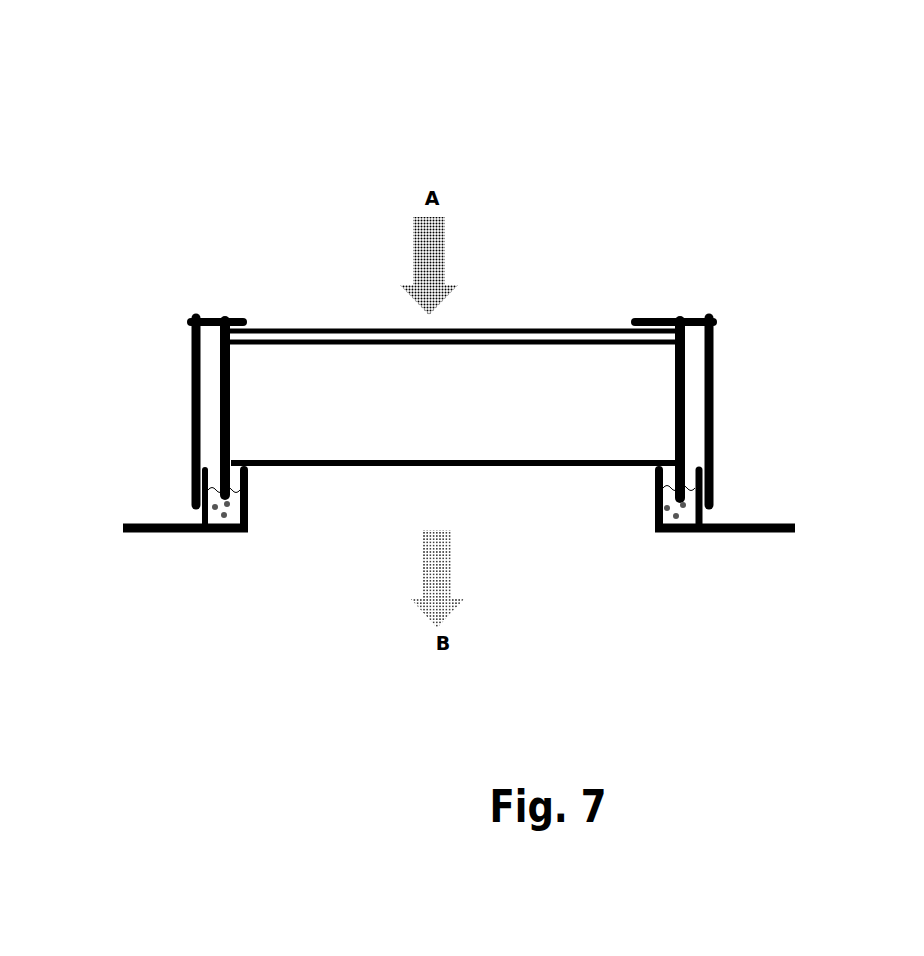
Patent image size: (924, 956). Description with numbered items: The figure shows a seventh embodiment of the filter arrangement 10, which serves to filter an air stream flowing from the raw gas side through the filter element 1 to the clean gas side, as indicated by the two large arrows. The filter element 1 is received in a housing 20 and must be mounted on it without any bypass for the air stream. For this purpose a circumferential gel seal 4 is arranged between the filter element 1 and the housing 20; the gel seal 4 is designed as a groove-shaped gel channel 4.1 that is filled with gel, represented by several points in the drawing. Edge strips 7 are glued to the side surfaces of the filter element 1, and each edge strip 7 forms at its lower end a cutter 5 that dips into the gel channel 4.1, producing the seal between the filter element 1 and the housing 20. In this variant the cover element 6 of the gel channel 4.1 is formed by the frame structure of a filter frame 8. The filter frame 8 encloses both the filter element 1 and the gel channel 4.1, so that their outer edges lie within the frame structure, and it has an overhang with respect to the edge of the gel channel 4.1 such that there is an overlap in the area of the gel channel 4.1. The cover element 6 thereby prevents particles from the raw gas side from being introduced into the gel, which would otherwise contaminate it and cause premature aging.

The filter arrangement 10 is at (755, 195).
The filter element 1 is at (553, 342).
The edge strip 7 is at (698, 424).
The cover element 6 is at (546, 411).
The filter frame 8 is at (723, 480).
The gel channel 4.1 is at (693, 510).
The cutter 5 is at (203, 498).
The gel seal 4 is at (125, 493).
The housing 20 is at (795, 528).